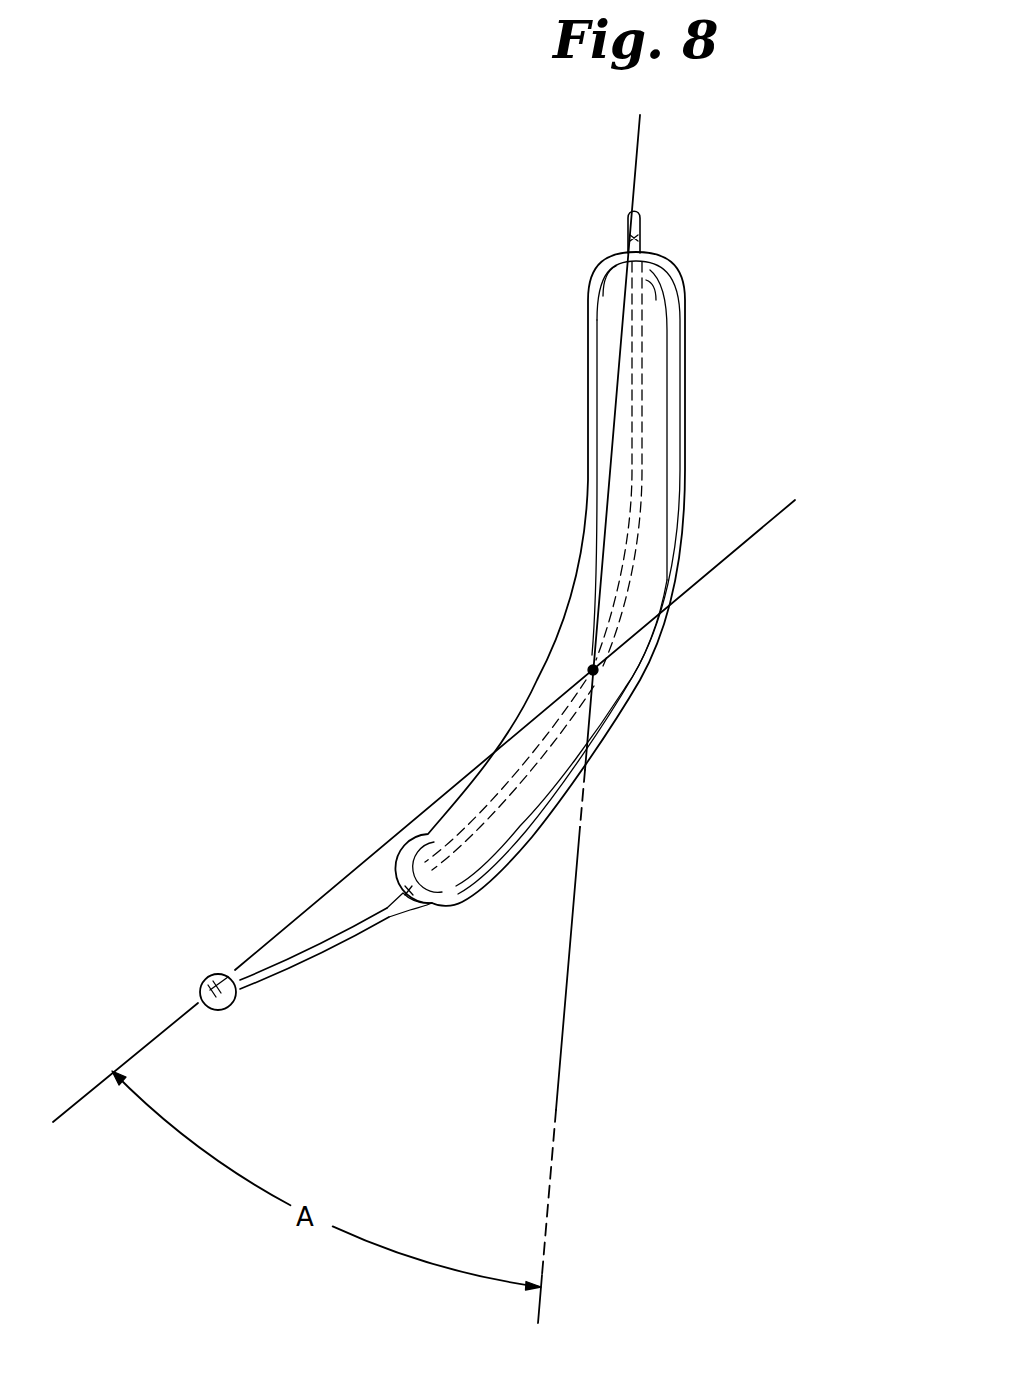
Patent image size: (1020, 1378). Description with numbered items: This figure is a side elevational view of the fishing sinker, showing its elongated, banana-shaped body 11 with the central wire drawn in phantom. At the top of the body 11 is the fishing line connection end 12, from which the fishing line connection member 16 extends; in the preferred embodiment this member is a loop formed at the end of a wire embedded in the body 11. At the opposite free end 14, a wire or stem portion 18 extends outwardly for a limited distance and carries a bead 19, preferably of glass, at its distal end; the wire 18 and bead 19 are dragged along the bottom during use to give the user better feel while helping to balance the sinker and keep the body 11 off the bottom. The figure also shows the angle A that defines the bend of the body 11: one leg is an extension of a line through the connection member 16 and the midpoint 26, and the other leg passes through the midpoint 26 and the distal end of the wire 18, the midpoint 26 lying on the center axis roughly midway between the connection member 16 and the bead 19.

The body 11 is at (686, 449).
The fishing line connection end 12 is at (608, 254).
The free end 14 is at (430, 906).
The fishing line connection member 16 is at (640, 212).
The wire or stem portion 18 is at (325, 952).
The bead 19 is at (200, 984).
The midpoint 26 is at (600, 668).